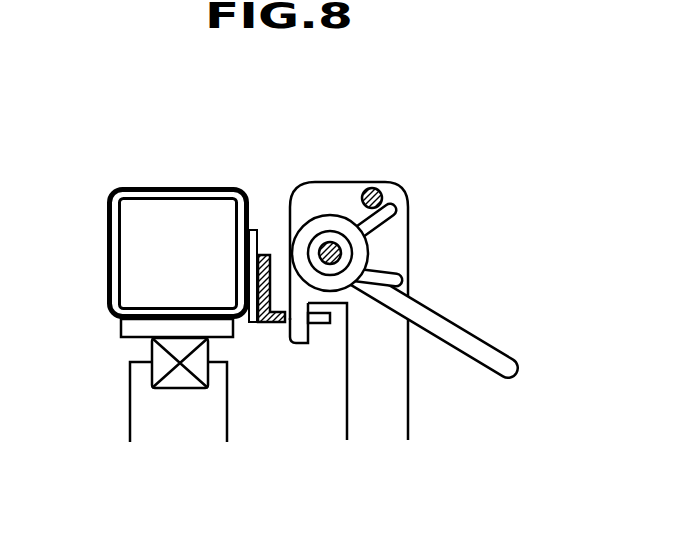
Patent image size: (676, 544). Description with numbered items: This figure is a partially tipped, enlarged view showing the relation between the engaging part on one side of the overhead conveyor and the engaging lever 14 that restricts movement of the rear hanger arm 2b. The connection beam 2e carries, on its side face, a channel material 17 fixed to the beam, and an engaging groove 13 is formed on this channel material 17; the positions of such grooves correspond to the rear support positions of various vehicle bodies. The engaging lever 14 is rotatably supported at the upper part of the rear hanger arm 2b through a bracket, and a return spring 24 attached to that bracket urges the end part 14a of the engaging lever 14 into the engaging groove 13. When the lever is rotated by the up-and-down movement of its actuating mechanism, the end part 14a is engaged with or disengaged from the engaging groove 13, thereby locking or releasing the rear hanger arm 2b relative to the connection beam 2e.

The connection beam 2e is at (218, 189).
The rear hanger arm 2b is at (145, 413).
The channel material 17 is at (272, 327).
The end part of the engaging lever 14a is at (302, 343).
The engaging groove 13 is at (325, 327).
The engaging lever 14 is at (458, 325).
The return spring 24 is at (405, 229).